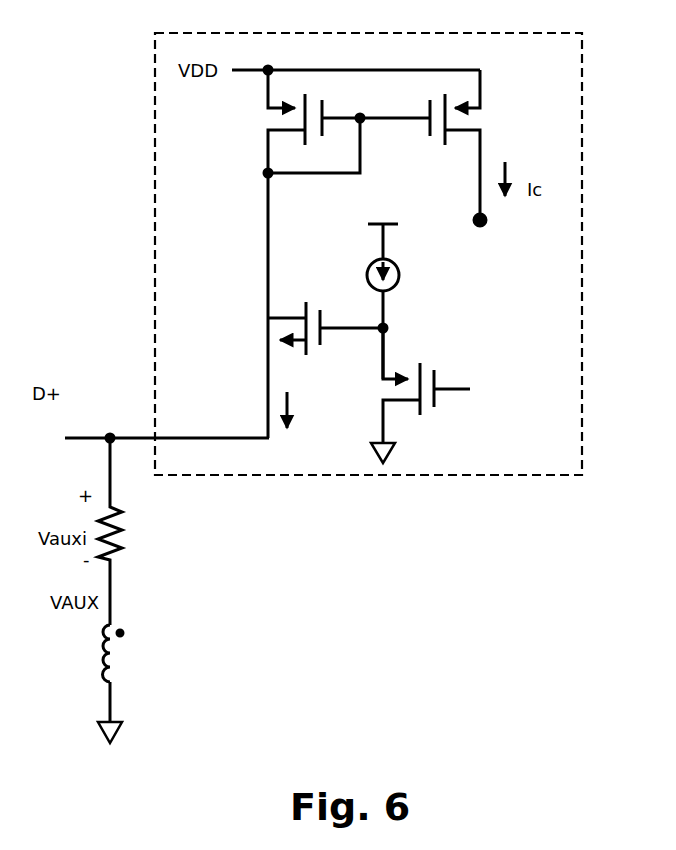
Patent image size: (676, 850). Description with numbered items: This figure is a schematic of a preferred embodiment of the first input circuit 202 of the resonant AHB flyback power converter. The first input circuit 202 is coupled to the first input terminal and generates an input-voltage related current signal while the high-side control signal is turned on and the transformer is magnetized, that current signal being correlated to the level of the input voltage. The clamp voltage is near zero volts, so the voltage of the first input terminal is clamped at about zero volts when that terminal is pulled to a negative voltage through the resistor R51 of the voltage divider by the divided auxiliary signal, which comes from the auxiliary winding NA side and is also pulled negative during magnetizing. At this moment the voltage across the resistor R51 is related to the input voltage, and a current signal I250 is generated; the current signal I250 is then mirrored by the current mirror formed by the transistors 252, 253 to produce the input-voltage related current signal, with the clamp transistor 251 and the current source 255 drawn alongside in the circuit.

The first input circuit 202 is at (307, 33).
The transistor 252 is at (294, 123).
The transistor 253 is at (443, 148).
The current source 255 is at (405, 301).
The clamp transistor 251 is at (437, 418).
The current signal I250 is at (327, 305).
The resistor R51 is at (135, 531).
The auxiliary winding NA is at (127, 654).